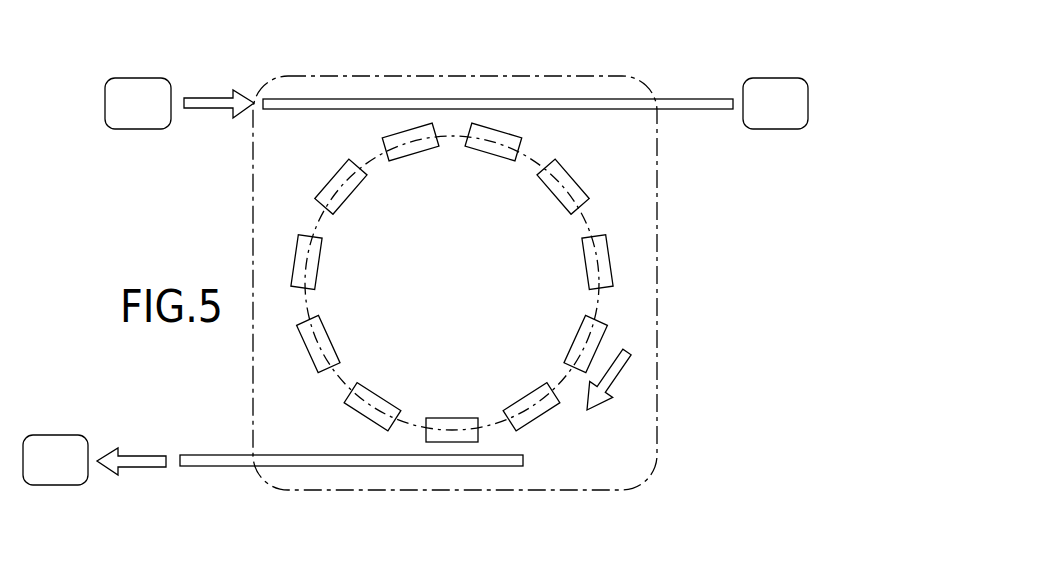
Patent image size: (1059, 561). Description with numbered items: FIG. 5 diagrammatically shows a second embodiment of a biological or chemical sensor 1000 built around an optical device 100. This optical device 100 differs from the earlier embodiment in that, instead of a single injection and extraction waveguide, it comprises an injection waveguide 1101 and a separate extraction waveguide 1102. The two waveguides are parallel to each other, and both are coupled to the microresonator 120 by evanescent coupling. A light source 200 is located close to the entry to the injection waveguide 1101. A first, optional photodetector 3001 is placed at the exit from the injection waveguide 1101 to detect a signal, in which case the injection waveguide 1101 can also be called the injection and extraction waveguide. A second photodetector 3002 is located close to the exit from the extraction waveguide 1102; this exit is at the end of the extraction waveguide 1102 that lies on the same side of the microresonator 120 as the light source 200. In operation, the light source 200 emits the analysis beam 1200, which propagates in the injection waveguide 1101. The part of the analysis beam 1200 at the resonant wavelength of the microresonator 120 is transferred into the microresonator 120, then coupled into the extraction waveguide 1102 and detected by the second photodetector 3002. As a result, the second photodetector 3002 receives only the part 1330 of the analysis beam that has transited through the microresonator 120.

The biological or chemical sensor 1000 is at (80, 198).
The optical device 100 is at (657, 253).
The microresonator 120 is at (582, 163).
The injection waveguide 1101 is at (297, 106).
The extraction waveguide 1102 is at (230, 466).
The light source 200 is at (133, 90).
The analysis beam 1200 is at (217, 108).
The first photodetector 3001 is at (772, 90).
The second photodetector 3002 is at (55, 470).
The part of the analysis beam 1330 is at (138, 468).